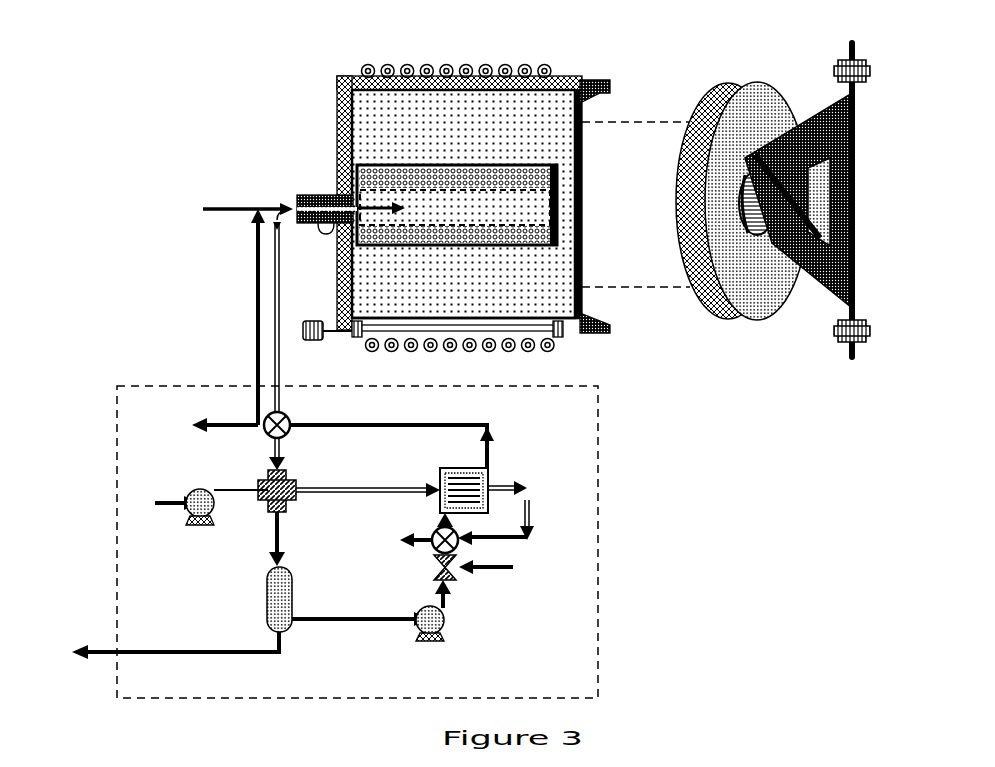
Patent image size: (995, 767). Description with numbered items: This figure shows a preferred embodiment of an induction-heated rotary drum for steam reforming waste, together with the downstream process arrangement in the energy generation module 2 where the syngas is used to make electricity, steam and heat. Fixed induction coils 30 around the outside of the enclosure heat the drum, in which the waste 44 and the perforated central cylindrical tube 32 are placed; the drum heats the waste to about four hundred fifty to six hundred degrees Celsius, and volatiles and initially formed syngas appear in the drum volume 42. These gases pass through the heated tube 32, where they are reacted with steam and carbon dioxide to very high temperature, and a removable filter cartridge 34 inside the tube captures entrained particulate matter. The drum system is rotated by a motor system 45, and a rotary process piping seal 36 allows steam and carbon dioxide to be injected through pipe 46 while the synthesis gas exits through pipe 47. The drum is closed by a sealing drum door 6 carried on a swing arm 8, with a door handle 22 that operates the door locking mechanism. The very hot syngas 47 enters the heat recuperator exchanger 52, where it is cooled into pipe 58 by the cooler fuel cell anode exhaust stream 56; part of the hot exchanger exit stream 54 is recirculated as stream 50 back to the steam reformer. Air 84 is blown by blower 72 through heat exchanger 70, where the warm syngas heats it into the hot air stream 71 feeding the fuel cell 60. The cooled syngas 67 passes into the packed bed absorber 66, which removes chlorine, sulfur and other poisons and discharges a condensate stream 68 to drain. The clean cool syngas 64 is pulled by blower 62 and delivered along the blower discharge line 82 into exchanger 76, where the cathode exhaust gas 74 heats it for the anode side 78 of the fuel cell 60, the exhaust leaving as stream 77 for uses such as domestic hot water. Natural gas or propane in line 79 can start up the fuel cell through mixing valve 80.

The energy generation module 2 is at (600, 472).
The sealing drum door 6 is at (727, 113).
The swing arm 8 is at (830, 292).
The door handle 22 is at (795, 318).
The induction coils 30 is at (400, 66).
The perforated central cylindrical tube 32 is at (490, 252).
The removable filter cartridge 34 is at (523, 228).
The rotary process piping seal 36 is at (325, 195).
The drum volume 42 is at (557, 125).
The waste 44 is at (570, 260).
The motor system 45 is at (318, 342).
The steam and carbon dioxide injection pipe 46 is at (234, 206).
The syngas exit pipe 47 is at (281, 300).
The recirculation stream pipe 50 is at (255, 297).
The heat recuperator exchanger 52 is at (289, 416).
The exchanger exit stream 54 is at (213, 418).
The fuel cell anode exhaust stream 56 is at (432, 423).
The cooled syngas pipe 58 is at (295, 452).
The fuel cell 60 is at (490, 478).
The blower 62 is at (436, 641).
The clean cool syngas stream 64 is at (321, 624).
The packed bed absorber 66 is at (268, 607).
The cooled syngas stream 67 is at (272, 523).
The condensate stream 68 is at (103, 648).
The heat exchanger 70 is at (266, 480).
The heated air stream 71 is at (376, 495).
The blower 72 is at (191, 513).
The cathode exhaust gas 74 is at (532, 514).
The heat exchanger 76 is at (434, 552).
The exchanger exit stream 77 is at (402, 545).
The anode side 78 is at (436, 523).
The start-up fuel line 79 is at (497, 570).
The mixing valve 80 is at (456, 575).
The line 82 is at (447, 598).
The air 84 is at (166, 498).